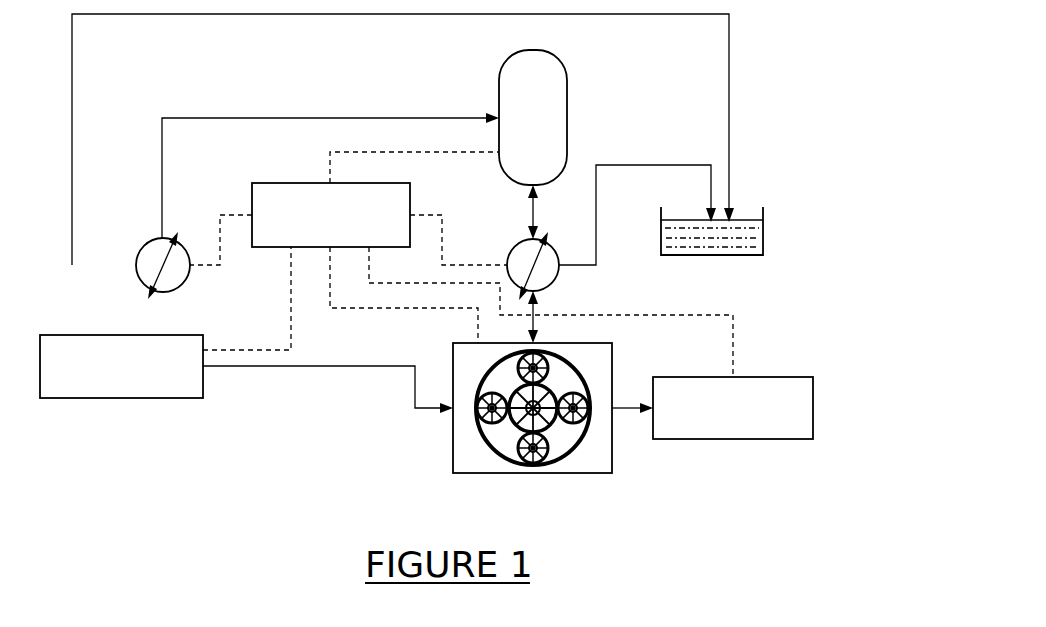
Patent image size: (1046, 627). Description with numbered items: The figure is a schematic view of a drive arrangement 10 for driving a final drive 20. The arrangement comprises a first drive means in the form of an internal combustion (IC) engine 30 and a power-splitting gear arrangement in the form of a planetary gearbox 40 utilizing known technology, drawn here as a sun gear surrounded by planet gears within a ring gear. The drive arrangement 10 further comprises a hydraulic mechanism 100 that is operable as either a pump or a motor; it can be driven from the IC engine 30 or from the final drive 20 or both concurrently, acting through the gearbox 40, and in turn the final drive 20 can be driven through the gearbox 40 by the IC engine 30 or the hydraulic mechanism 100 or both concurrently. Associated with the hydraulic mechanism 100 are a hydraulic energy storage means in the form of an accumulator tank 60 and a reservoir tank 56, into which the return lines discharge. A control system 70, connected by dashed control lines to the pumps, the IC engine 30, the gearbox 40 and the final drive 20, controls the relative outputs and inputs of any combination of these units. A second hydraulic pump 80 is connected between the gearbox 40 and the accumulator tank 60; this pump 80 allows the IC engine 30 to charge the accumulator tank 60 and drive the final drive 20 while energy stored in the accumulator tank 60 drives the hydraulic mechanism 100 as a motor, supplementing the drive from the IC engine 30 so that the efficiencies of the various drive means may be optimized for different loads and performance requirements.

The drive arrangement 10 is at (816, 86).
The final drive 20 is at (772, 377).
The IC engine 30 is at (120, 398).
The planetary gearbox 40 is at (563, 456).
The reservoir tank 56 is at (764, 228).
The accumulator tank 60 is at (507, 64).
The control system 70 is at (292, 183).
The second hydraulic pump 80 is at (140, 285).
The hydraulic mechanism 100 is at (556, 278).